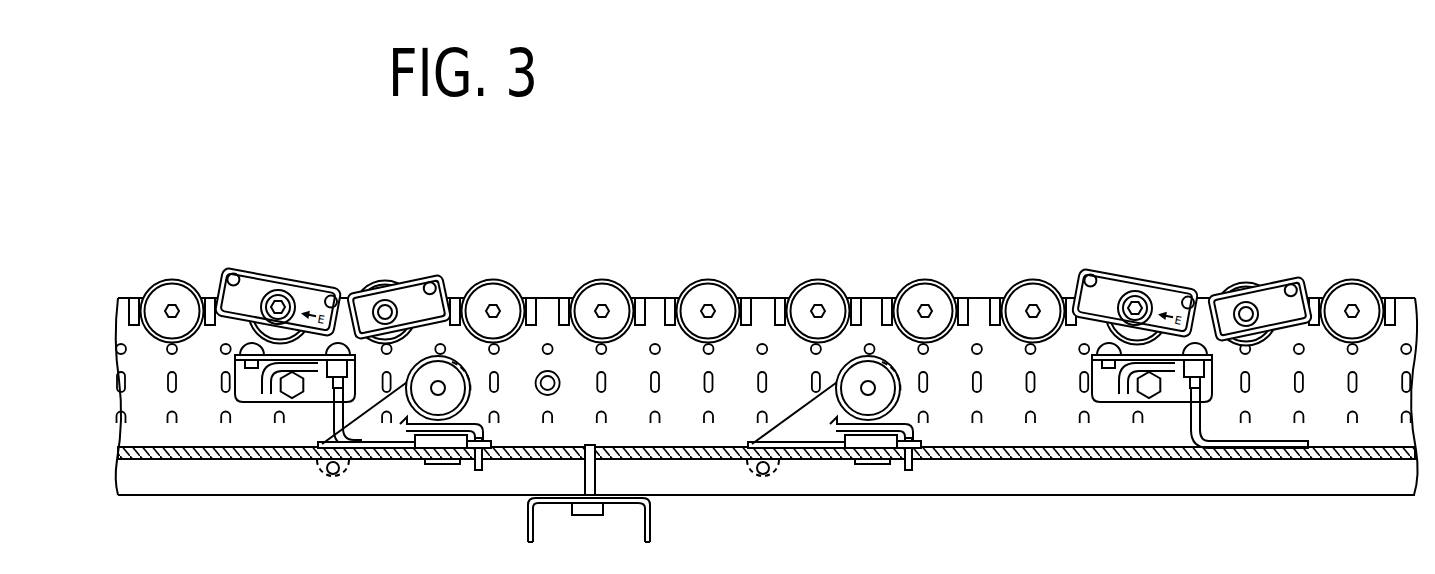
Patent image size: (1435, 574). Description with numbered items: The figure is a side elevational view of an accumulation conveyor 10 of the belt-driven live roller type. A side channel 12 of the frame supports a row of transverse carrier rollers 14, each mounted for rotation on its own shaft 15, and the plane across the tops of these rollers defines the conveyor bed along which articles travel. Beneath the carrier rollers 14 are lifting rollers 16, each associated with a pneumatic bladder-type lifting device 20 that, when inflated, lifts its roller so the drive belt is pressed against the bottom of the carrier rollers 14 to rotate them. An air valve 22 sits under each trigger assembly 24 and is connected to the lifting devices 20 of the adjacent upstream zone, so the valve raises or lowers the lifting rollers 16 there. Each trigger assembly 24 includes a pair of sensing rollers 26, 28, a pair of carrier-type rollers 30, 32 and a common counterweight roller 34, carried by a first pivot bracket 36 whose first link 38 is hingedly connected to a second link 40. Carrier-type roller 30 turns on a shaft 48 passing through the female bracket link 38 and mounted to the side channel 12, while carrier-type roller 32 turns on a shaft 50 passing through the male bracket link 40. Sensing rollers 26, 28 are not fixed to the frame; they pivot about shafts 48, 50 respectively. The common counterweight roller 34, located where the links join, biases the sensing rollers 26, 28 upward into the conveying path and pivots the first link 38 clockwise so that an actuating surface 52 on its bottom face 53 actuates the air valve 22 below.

The accumulation conveyor 10 is at (965, 175).
The side channel 12 is at (1380, 458).
The carrier roller 14 is at (152, 290).
The shaft 15 is at (168, 308).
The lifting roller 16 is at (470, 395).
The pneumatic bladder-type lifting device 20 is at (443, 437).
The air valve 22 is at (335, 352).
The trigger assembly 24 is at (744, 261).
The sensing roller 26 is at (234, 268).
The sensing roller 28 is at (430, 280).
The carrier-type roller 30 is at (290, 281).
The carrier-type roller 32 is at (385, 286).
The common counterweight roller 34 is at (338, 288).
The first pivot bracket 36 is at (304, 205).
The first link 38 is at (227, 298).
The second link 40 is at (455, 300).
The shaft 48 is at (277, 306).
The shaft 50 is at (386, 306).
The actuating surface 52 is at (338, 382).
The bottom face 53 is at (226, 322).